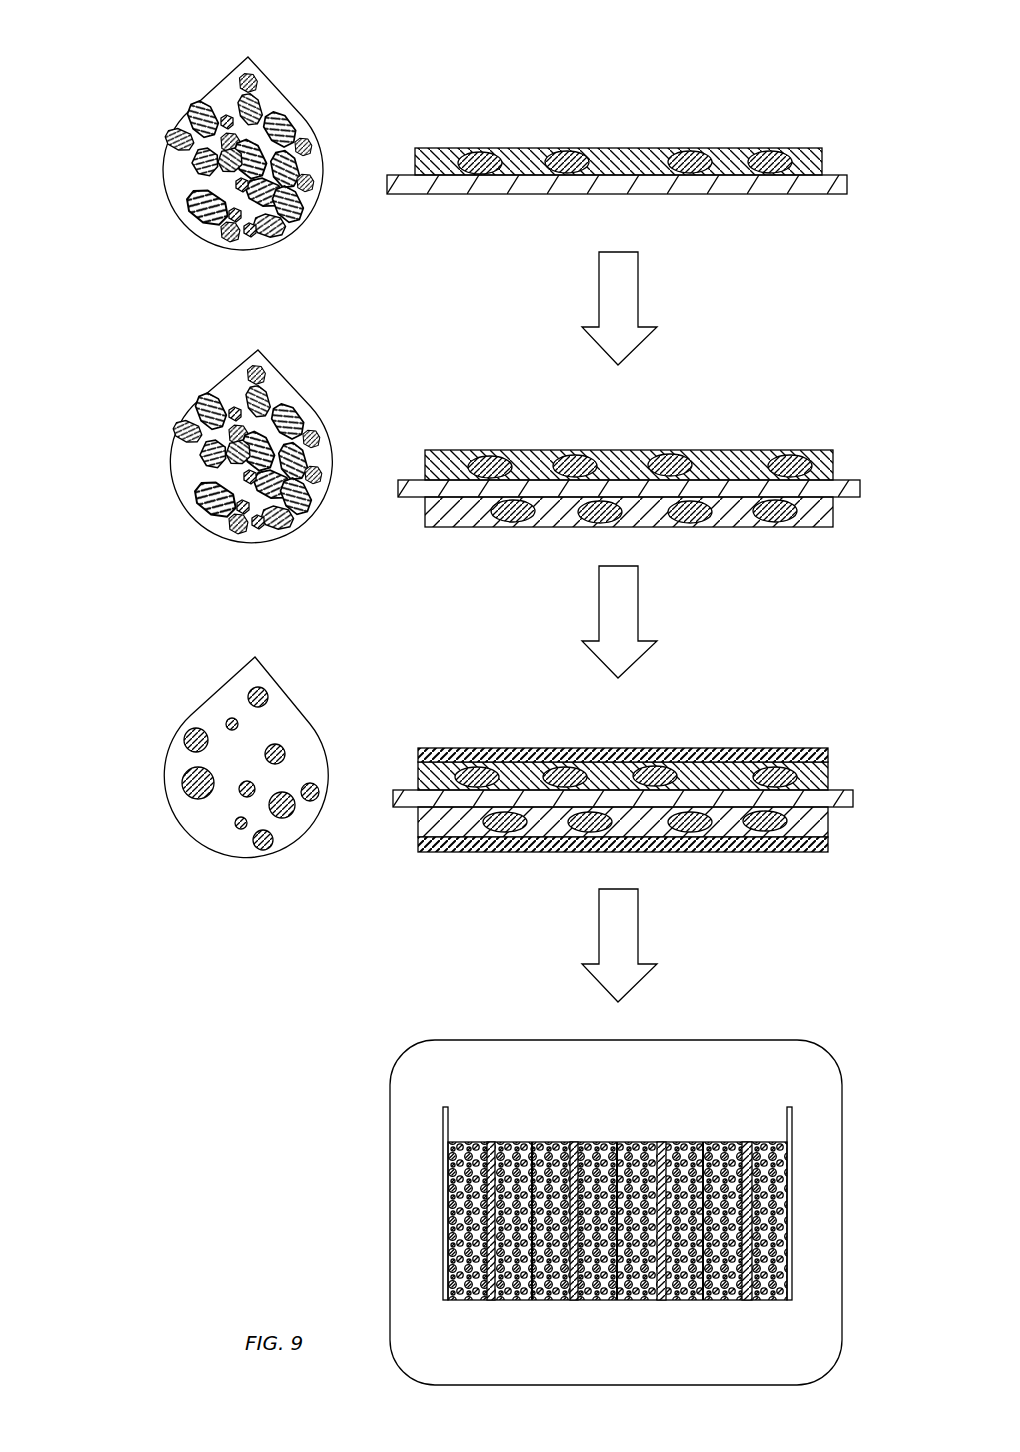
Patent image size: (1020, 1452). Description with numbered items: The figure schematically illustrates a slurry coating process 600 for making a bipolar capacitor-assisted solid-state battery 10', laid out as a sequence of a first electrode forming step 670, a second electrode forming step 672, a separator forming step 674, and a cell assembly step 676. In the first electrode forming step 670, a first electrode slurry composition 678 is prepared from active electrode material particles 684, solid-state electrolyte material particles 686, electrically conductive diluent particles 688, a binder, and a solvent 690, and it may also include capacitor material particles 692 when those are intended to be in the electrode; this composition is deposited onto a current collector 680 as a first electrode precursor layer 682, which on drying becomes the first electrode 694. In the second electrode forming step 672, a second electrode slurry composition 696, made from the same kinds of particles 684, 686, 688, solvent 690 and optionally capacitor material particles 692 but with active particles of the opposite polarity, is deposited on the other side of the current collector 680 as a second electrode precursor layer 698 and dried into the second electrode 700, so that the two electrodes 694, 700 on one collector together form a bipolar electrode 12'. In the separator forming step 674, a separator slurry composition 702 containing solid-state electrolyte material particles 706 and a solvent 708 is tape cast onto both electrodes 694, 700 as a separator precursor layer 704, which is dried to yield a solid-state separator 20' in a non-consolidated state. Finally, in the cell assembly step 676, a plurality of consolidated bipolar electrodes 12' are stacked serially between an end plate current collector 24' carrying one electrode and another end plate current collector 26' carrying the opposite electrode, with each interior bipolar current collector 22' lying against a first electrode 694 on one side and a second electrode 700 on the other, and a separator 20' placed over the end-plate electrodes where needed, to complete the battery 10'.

The slurry coating process 600 is at (803, 57).
The first electrode forming step 670 is at (130, 61).
The second electrode forming step 672 is at (128, 327).
The separator forming step 674 is at (130, 647).
The cell assembly step 676 is at (264, 1153).
The first electrode slurry composition 678 is at (236, 68).
The current collector 680 is at (826, 192).
The first electrode precursor layer 682 is at (812, 152).
The active electrode material particles 684 is at (207, 205).
The solid-state electrolyte material particles 686 is at (176, 146).
The electrically conductive diluent particles 688 is at (255, 82).
The solvent 690 is at (312, 203).
The capacitor material particles 692 is at (257, 110).
The first electrode 694 is at (832, 470).
The second electrode slurry composition 696 is at (234, 362).
The second electrode precursor layer 698 is at (806, 520).
The second electrode 700 is at (830, 820).
The separator slurry composition 702 is at (236, 670).
The separator precursor layer 704 is at (820, 750).
The solid-state electrolyte material particles 706 is at (192, 790).
The solvent 708 is at (235, 824).
The bipolar capacitor-assisted solid-state battery 10' is at (616, 1212).
The bipolar electrode 12' is at (541, 867).
The solid-state separator 20' is at (609, 1221).
The bipolar current collector 22' is at (629, 1192).
The end plate current collector 24' is at (422, 1202).
The end plate current collector 26' is at (809, 1201).